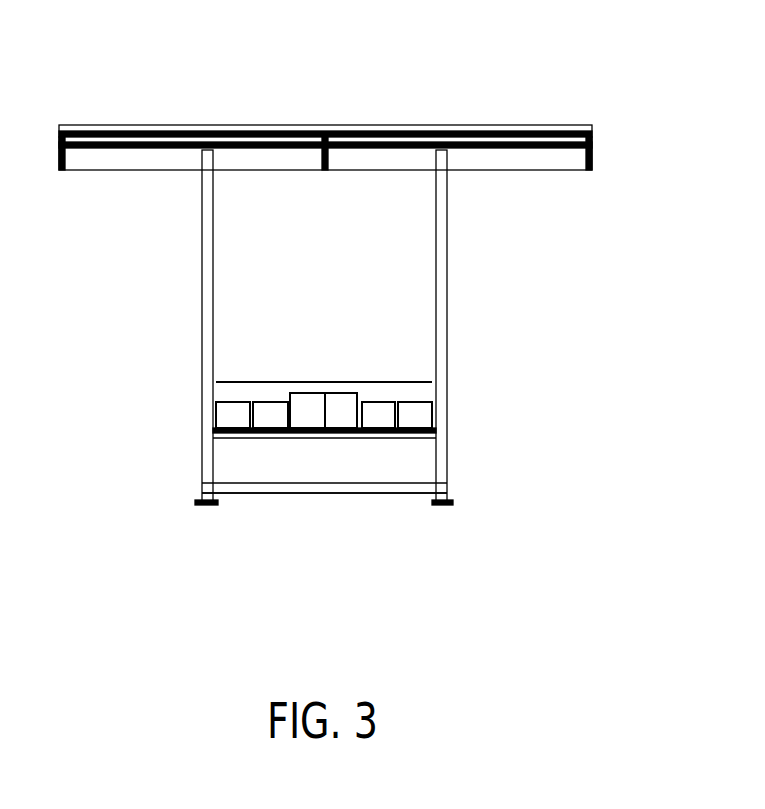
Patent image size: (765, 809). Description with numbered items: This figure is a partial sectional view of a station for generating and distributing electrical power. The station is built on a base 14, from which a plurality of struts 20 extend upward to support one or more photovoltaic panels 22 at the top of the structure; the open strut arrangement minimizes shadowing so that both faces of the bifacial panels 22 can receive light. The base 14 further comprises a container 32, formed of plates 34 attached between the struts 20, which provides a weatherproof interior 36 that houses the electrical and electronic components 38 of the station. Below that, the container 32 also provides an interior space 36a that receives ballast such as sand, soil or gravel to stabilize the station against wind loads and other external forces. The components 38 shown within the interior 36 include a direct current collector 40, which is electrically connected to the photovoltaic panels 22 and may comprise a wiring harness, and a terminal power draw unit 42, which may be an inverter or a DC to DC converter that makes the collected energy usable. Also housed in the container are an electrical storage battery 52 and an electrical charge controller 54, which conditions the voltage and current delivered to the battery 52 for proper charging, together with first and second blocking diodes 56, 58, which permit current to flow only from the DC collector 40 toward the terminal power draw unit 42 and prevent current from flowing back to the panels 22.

The base 14 is at (412, 493).
The struts 20 is at (207, 268).
The photovoltaic panel 22 is at (565, 105).
The container 32 is at (432, 387).
The plates 34 is at (370, 382).
The weatherproof interior 36 is at (432, 462).
The interior space 36a is at (265, 472).
The electrical and electronic components 38 is at (327, 345).
The direct current collector 40 is at (348, 417).
The terminal power draw unit 42 is at (415, 415).
The electrical storage battery 52 is at (275, 418).
The electrical charge controller 54 is at (235, 415).
The first blocking diode 56 is at (377, 418).
The second blocking diode 58 is at (378, 415).